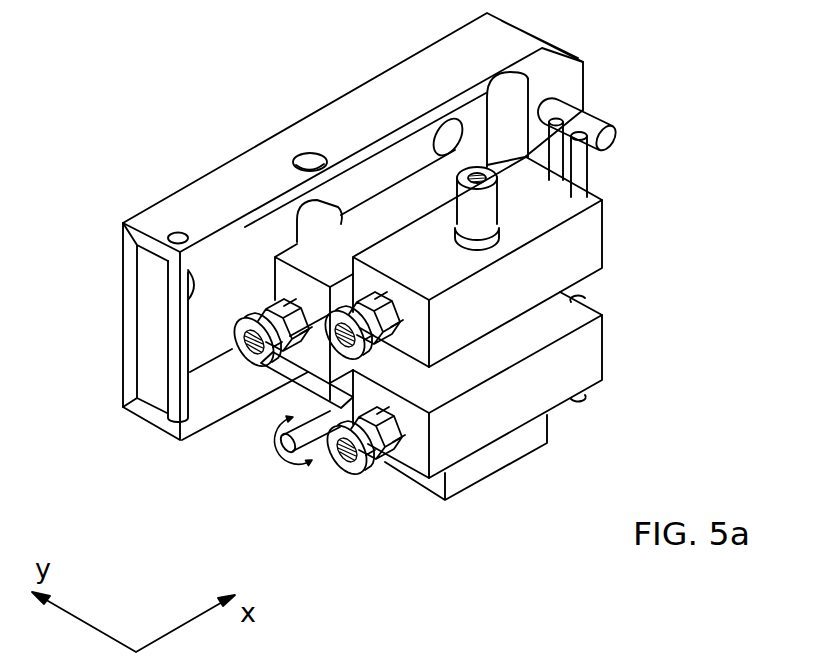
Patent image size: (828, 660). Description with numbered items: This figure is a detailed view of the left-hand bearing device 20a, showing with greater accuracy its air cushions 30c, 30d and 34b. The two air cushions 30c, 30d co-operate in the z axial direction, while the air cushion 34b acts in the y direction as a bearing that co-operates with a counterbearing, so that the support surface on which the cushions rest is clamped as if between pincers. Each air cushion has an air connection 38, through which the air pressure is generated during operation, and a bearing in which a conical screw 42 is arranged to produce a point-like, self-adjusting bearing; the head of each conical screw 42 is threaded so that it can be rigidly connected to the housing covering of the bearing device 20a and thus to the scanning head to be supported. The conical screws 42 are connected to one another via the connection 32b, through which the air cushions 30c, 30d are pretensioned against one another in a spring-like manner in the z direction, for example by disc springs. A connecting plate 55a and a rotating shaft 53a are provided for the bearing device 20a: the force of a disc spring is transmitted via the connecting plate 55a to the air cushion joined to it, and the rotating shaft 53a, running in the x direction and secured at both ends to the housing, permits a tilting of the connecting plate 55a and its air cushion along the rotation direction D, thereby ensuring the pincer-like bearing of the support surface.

The left-hand bearing device 20a is at (254, 33).
The air cushion 34b is at (392, 200).
The conical screw 42 is at (290, 235).
The air cushion 30c is at (597, 243).
The air cushion 30d is at (597, 358).
The air connection 38 is at (382, 300).
The connection 32b is at (300, 373).
The rotating shaft 53a is at (315, 435).
The rotation direction D is at (282, 462).
The connecting plate 55a is at (478, 473).